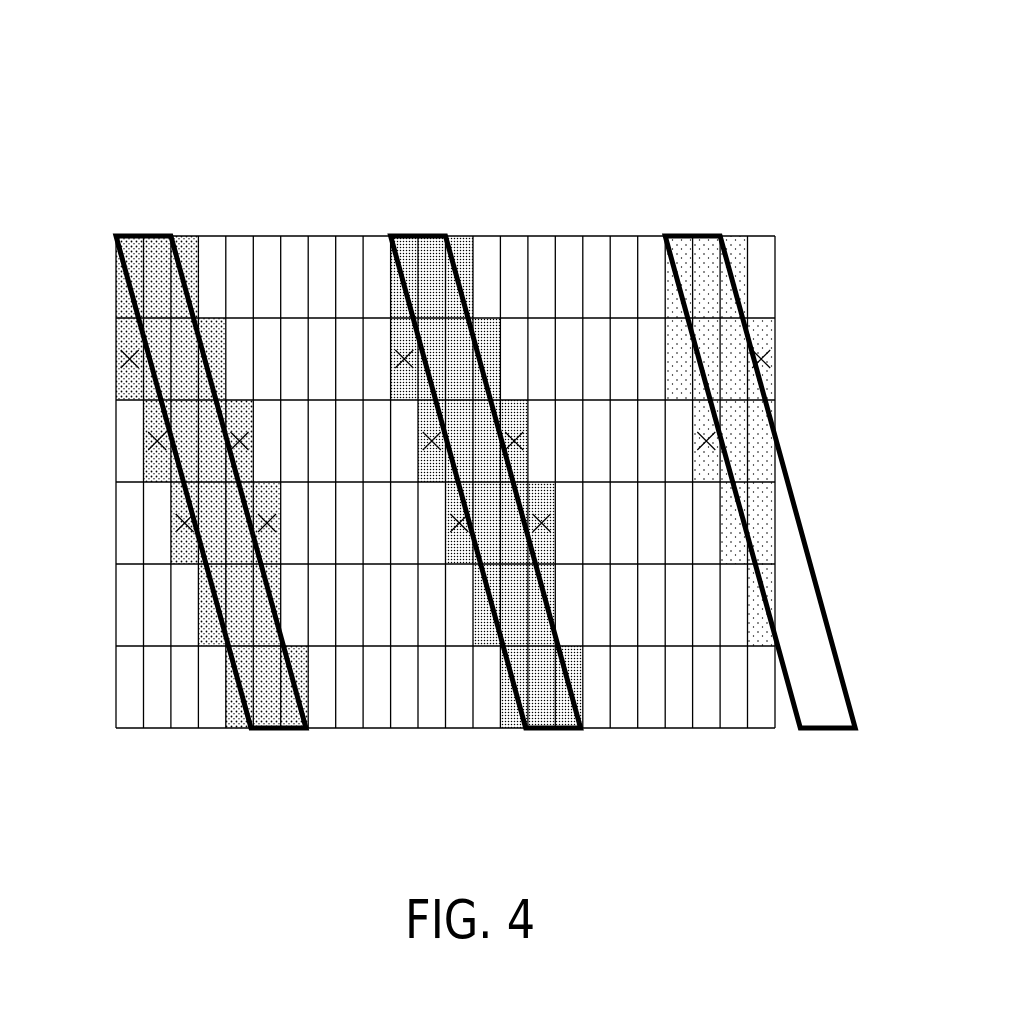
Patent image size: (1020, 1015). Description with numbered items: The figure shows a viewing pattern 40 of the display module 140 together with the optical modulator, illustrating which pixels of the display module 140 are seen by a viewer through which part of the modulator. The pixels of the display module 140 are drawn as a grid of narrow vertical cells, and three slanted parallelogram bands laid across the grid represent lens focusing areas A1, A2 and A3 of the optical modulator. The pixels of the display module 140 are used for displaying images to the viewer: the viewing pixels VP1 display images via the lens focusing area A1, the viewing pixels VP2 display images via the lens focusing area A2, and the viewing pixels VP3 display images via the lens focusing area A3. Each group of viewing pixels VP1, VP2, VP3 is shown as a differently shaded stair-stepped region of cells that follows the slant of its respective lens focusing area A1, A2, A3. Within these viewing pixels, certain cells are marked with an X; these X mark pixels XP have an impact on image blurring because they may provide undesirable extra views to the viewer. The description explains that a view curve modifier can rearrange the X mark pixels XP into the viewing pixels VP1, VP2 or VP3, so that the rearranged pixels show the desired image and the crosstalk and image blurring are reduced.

The viewing pattern 40 is at (755, 75).
The display module 140 is at (776, 260).
The lens focusing area A1 is at (160, 236).
The lens focusing area A2 is at (434, 236).
The lens focusing area A3 is at (709, 236).
The viewing pixels VP1 is at (187, 247).
The viewing pixels VP2 is at (461, 247).
The viewing pixels VP3 is at (735, 247).
The X mark pixels XP is at (132, 388).